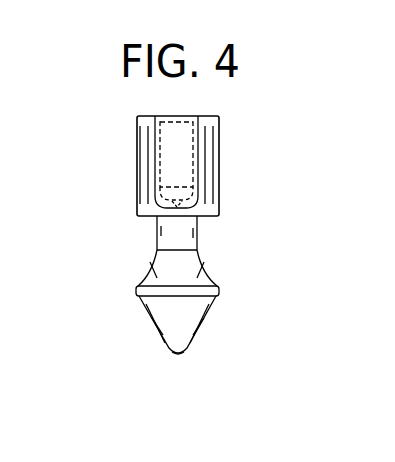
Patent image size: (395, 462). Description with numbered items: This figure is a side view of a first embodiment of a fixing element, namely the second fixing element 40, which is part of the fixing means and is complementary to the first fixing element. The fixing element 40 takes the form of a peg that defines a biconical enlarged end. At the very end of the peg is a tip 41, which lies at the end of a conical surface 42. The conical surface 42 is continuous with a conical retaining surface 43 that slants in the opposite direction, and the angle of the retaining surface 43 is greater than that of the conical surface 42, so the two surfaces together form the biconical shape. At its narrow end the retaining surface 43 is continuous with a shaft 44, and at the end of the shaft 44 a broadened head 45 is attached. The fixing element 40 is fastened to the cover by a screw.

The second fixing element 40 is at (120, 230).
The tip 41 is at (178, 358).
The conical surface 42 is at (216, 322).
The conical retaining surface 43 is at (219, 270).
The shaft 44 is at (197, 232).
The broadened head 45 is at (219, 152).